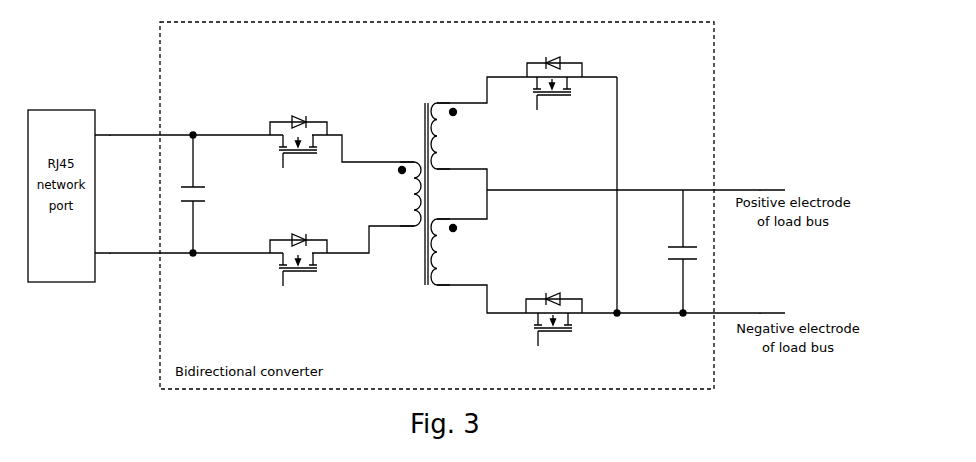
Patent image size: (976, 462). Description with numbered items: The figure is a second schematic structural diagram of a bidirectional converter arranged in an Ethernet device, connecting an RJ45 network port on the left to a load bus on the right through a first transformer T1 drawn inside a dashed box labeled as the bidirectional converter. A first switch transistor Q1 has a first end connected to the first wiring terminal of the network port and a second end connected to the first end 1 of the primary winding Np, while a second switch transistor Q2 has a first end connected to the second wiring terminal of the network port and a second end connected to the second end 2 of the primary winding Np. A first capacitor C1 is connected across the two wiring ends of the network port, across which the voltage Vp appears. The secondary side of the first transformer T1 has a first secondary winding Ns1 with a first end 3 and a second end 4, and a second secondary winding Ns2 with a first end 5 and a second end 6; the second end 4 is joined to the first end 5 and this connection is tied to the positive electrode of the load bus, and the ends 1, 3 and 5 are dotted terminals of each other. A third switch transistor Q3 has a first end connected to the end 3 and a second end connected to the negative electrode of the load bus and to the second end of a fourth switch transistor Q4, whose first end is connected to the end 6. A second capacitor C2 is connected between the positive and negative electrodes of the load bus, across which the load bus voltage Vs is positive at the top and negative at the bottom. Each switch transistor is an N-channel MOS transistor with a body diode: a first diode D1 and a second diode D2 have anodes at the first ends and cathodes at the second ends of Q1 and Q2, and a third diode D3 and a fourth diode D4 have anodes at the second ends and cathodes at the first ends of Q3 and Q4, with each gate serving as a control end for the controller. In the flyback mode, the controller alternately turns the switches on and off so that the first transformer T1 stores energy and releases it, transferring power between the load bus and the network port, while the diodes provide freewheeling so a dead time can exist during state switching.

The first end of the primary winding 1 is at (404, 154).
The second end of the primary winding 2 is at (404, 239).
The first end of the first secondary winding 3 is at (445, 94).
The second end of the first secondary winding 4 is at (445, 178).
The first end of the second secondary winding 5 is at (445, 212).
The second end of the second secondary winding 6 is at (445, 297).
The first capacitor C1 is at (205, 194).
The second capacitor C2 is at (670, 253).
The first diode D1 is at (298, 117).
The second diode D2 is at (298, 235).
The third diode D3 is at (554, 59).
The fourth diode D4 is at (554, 296).
The first switch transistor Q1 is at (298, 161).
The second switch transistor Q2 is at (298, 279).
The third switch transistor Q3 is at (552, 103).
The fourth switch transistor Q4 is at (546, 330).
The first transformer T1 is at (427, 185).
The primary winding Np is at (397, 194).
The first secondary winding Ns1 is at (453, 136).
The second secondary winding Ns2 is at (453, 252).
The voltage at the network port Vp is at (122, 194).
The voltage of the load bus Vs is at (768, 252).